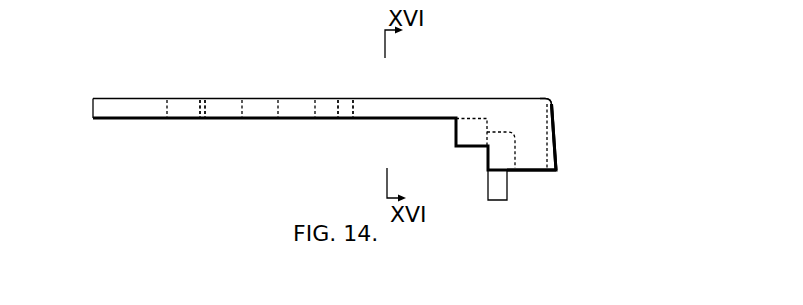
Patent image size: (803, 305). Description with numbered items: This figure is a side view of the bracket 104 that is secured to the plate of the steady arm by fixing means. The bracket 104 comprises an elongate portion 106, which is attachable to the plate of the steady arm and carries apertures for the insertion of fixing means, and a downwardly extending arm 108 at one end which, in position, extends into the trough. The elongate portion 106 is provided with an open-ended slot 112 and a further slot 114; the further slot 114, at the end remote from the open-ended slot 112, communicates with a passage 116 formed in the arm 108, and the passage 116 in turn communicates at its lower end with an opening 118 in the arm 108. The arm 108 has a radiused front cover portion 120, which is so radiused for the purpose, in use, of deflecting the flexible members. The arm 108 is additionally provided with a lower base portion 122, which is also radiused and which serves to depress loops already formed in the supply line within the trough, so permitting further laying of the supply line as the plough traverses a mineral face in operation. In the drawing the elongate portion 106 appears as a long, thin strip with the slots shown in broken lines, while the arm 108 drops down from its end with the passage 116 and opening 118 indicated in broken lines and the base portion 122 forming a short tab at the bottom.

The bracket 104 is at (302, 92).
The elongate portion 106 is at (183, 107).
The downwardly extending arm 108 is at (566, 147).
The open-ended slot 112 is at (200, 118).
The further slot 114 is at (338, 117).
The passage 116 is at (553, 97).
The opening 118 is at (544, 179).
The radiused front cover portion 120 is at (556, 137).
The lower base portion 122 is at (500, 193).